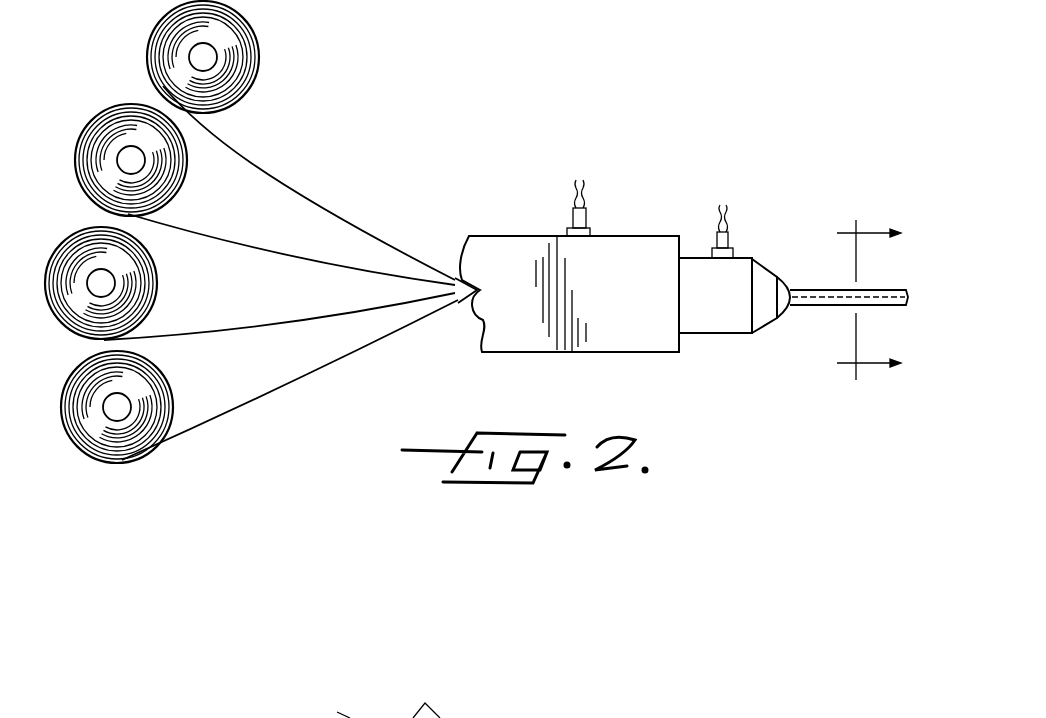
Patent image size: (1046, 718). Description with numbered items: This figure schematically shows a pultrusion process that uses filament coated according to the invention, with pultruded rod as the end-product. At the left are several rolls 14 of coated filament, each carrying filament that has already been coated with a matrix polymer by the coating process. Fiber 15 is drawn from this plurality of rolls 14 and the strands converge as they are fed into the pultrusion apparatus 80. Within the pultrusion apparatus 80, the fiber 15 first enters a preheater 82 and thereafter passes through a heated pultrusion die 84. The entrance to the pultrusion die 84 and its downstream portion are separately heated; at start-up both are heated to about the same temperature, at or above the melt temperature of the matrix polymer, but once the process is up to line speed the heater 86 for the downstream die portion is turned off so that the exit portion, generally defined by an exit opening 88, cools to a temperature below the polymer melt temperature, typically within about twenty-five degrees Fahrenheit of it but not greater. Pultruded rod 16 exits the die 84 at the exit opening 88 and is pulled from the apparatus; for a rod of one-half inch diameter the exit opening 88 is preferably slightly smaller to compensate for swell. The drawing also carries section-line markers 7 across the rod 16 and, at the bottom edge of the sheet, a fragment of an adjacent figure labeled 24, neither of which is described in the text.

The roll of coated filament 14 is at (247, 25).
The fiber 15 is at (335, 217).
The pultrusion apparatus 80 is at (532, 177).
The preheater 82 is at (497, 240).
The heated pultrusion die 84 is at (708, 320).
The heater 86 is at (708, 250).
The exit opening 88 is at (797, 290).
The pultruded rod 16 is at (872, 292).
The section line 7- 7 is at (855, 301).
The fragment of adjacent figure 24 is at (445, 715).